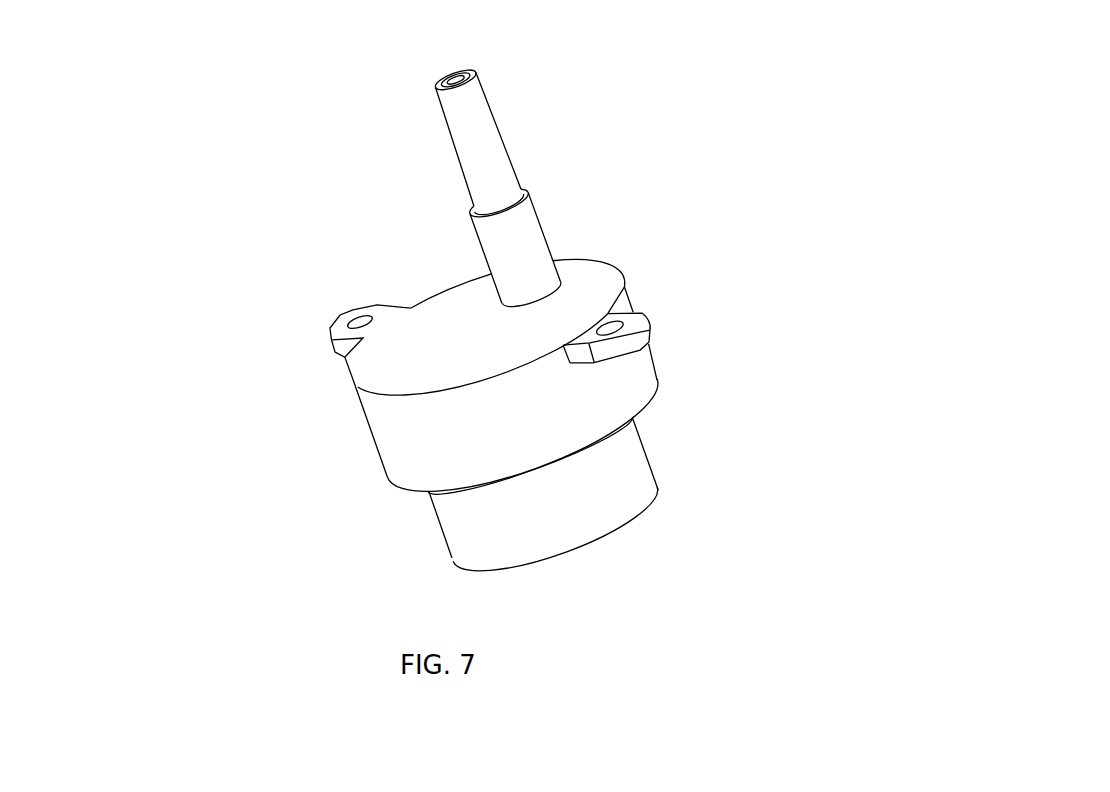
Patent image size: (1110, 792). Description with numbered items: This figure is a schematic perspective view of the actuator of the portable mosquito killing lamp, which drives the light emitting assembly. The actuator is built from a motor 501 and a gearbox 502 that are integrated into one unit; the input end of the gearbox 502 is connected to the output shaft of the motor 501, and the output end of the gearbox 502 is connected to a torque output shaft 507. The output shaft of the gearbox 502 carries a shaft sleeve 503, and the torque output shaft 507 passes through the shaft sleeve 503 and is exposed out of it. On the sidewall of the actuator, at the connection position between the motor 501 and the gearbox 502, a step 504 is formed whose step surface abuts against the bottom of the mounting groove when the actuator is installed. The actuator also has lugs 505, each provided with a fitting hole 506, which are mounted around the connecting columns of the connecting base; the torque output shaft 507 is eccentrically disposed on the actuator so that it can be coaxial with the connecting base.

The motor 501 is at (622, 483).
The gearbox 502 is at (397, 445).
The shaft sleeve 503 is at (518, 237).
The step 504 is at (650, 402).
The lug 505 is at (333, 330).
The fitting hole 506 is at (363, 327).
The torque output shaft 507 is at (483, 133).